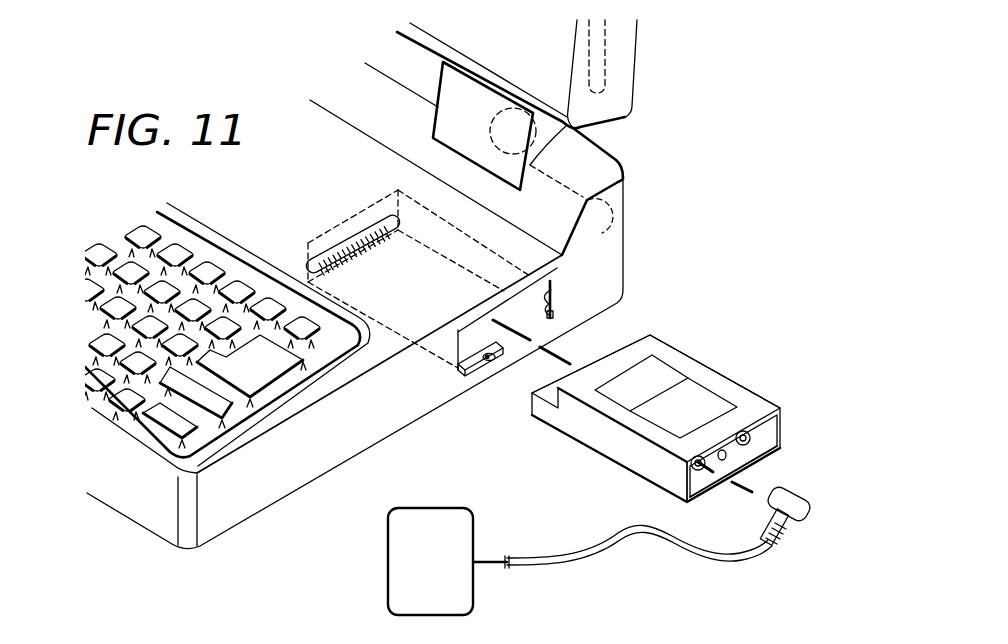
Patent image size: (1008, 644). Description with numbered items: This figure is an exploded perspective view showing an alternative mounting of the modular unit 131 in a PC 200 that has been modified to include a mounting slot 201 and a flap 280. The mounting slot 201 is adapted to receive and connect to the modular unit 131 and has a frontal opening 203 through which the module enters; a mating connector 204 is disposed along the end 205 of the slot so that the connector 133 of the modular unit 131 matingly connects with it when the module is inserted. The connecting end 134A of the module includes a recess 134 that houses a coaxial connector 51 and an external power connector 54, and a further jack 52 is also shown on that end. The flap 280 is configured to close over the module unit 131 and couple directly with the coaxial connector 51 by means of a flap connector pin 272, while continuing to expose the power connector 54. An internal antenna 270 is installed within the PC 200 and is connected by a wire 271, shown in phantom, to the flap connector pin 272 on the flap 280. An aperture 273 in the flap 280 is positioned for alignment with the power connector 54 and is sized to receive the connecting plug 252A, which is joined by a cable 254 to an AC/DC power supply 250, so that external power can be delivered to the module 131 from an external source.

The PC 200 is at (617, 198).
The mounting slot 201 is at (441, 296).
The frontal opening 203 is at (472, 340).
The mating connector 204 is at (357, 232).
The end 205 is at (388, 210).
The internal antenna 270 is at (606, 62).
The wire 271 is at (603, 233).
The flap connector pin 272 is at (553, 303).
The aperture 273 is at (517, 360).
The flap 280 is at (467, 378).
The modular unit 131 is at (681, 408).
The connector 133 is at (626, 345).
The recess 134 is at (763, 430).
The connecting end 134A is at (683, 482).
The power jack 52 is at (733, 438).
The coaxial connector 51 is at (750, 448).
The external power connector 54 is at (705, 470).
The AC/DC power supply 250 is at (476, 534).
The cable 254 is at (622, 546).
The connecting plug 252A is at (797, 520).